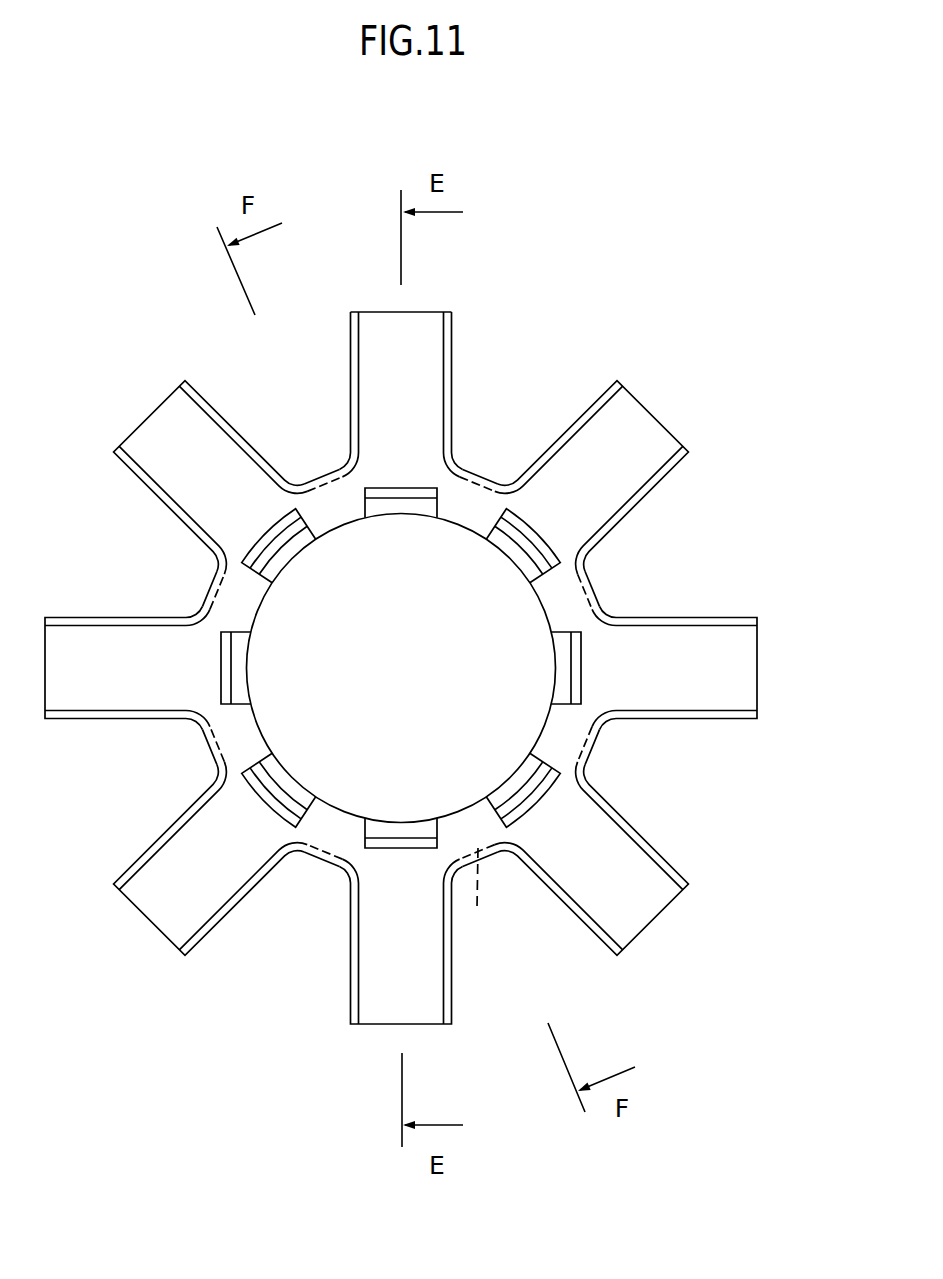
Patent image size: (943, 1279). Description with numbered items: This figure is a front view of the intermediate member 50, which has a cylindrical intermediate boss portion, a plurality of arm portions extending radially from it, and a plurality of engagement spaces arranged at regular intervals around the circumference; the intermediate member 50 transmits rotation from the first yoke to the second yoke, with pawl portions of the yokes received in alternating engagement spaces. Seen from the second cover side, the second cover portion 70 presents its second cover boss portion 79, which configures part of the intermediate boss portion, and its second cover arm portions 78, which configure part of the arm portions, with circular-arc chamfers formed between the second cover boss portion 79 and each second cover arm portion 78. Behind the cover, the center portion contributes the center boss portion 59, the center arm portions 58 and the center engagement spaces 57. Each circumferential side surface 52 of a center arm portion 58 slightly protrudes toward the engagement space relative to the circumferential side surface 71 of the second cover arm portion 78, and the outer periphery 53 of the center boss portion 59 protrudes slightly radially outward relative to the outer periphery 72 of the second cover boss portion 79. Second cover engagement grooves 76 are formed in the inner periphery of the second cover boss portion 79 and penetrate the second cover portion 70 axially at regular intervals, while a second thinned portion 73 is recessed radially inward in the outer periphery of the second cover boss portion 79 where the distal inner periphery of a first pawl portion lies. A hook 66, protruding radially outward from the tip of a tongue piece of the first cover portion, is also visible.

The intermediate member 50 is at (656, 398).
The circumferential side surface 52 is at (352, 346).
The outer periphery 53 is at (319, 856).
The center engagement space 57 is at (259, 397).
The center arm portion 58 is at (665, 472).
The center boss portion 59 is at (596, 583).
The hook 66 is at (293, 531).
The second cover portion 70 is at (372, 303).
The circumferential side surface 71 is at (351, 378).
The outer periphery 72 is at (303, 852).
The second thinned portion 73 is at (474, 908).
The second cover engagement groove 76 is at (267, 557).
The second cover arm portion 78 is at (420, 420).
The second cover boss portion 79 is at (332, 835).